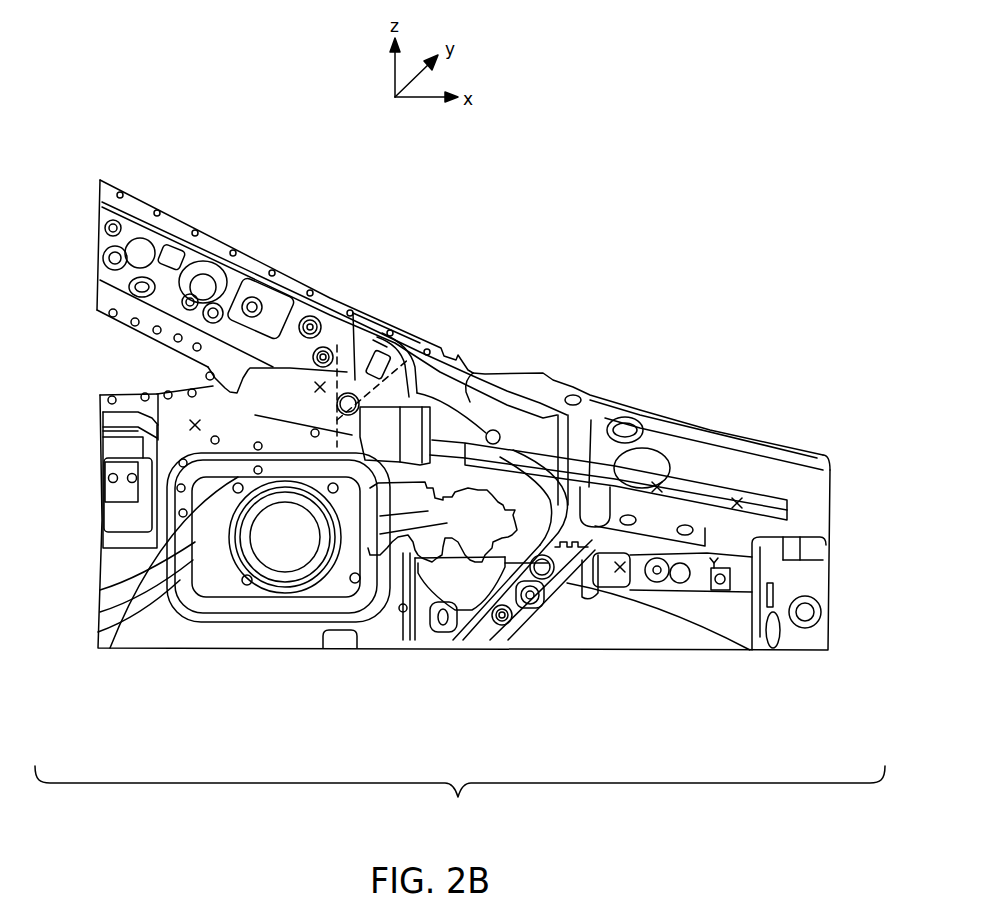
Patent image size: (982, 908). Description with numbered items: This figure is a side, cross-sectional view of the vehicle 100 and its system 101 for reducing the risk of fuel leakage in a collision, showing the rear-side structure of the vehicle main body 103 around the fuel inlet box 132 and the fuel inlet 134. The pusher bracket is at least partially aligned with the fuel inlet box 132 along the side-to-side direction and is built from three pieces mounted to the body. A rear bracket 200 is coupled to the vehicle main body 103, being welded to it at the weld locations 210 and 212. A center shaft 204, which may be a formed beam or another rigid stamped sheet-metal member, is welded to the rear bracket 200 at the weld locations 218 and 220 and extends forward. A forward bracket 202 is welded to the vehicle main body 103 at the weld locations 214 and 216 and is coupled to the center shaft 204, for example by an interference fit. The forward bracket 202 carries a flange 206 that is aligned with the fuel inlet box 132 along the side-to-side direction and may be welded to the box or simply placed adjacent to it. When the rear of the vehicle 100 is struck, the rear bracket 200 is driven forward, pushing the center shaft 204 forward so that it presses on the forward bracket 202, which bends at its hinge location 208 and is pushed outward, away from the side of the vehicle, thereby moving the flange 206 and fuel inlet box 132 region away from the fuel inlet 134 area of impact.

The vehicle 100 is at (106, 122).
The system 101 is at (616, 257).
The vehicle main body 103 is at (253, 270).
The fuel inlet box 132 is at (223, 583).
The fuel inlet 134 is at (297, 557).
The rear bracket 200 is at (702, 477).
The forward bracket 202 is at (352, 393).
The center shaft 204 is at (577, 430).
The flange 206 is at (270, 463).
The hinge location 208 is at (406, 380).
The weld location 210 is at (620, 570).
The weld location 212 is at (714, 566).
The weld location 214 is at (320, 387).
The weld location 216 is at (195, 425).
The weld location 218 is at (657, 487).
The weld location 220 is at (737, 503).